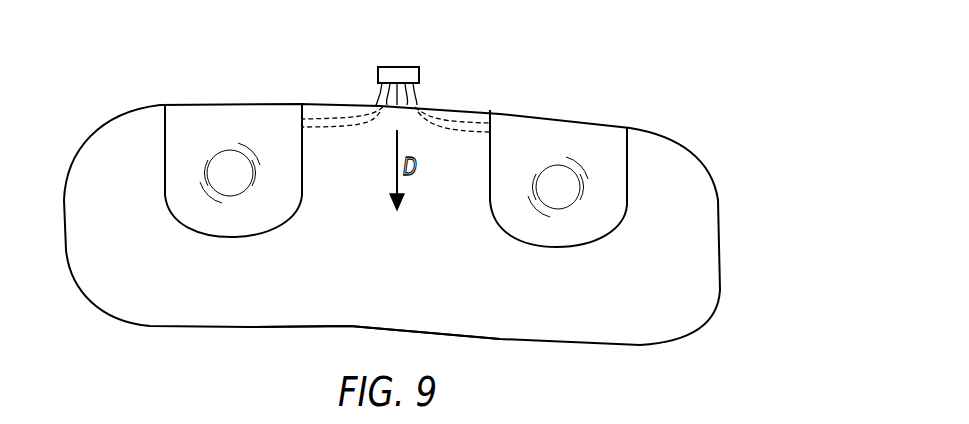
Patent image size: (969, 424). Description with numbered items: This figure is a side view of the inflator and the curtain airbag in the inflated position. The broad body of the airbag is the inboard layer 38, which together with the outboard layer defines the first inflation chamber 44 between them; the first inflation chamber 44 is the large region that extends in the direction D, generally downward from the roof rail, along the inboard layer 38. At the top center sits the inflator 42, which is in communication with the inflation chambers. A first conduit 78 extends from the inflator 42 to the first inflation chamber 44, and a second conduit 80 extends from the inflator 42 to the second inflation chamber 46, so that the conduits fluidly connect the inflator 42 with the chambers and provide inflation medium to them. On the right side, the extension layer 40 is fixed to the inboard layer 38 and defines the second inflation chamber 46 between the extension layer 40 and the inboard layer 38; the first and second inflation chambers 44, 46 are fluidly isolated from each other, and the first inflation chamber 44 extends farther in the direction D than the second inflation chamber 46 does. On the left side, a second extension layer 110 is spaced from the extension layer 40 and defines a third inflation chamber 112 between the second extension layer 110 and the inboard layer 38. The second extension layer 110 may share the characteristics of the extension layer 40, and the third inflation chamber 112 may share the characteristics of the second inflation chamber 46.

The inboard layer 38 is at (426, 277).
The extension layer 40 is at (604, 163).
The inflator 42 is at (408, 66).
The first inflation chamber 44 is at (343, 282).
The second inflation chamber 46 is at (593, 220).
The first conduit 78 is at (418, 93).
The second conduit 80 is at (418, 102).
The second extension layer 110 is at (198, 147).
The third inflation chamber 112 is at (194, 204).